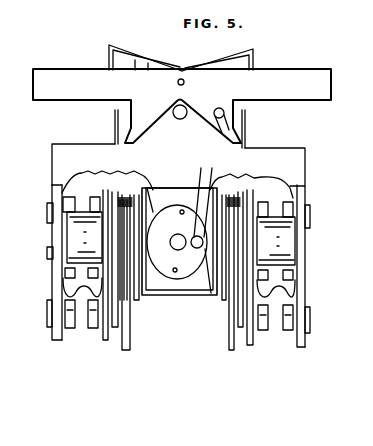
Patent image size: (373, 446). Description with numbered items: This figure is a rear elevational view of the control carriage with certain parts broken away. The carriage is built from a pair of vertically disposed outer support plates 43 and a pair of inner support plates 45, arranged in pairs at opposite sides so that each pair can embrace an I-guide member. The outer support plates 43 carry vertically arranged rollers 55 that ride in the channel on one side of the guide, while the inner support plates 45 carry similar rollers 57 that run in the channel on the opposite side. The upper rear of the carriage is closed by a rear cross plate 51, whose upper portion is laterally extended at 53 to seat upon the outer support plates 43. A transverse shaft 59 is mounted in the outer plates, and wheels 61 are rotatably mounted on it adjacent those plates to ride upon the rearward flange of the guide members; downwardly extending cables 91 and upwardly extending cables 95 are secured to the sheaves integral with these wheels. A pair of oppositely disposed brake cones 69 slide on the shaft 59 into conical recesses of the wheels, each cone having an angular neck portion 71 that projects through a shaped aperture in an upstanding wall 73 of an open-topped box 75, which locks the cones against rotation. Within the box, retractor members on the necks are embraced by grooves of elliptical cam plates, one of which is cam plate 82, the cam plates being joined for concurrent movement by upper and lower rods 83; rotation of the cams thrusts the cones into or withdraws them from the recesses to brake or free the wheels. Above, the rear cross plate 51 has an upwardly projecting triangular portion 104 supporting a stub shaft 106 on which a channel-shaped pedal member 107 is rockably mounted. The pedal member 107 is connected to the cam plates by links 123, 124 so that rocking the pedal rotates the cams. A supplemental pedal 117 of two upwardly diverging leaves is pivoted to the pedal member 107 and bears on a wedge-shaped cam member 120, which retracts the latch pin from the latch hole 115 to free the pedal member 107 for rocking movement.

The pedal member 107 is at (322, 89).
The wedge-shaped cam member 120 is at (140, 67).
The supplemental pedal 117 is at (253, 65).
The latch hole 115 is at (184, 82).
The stub shaft 106 is at (176, 118).
The triangular portion 104 is at (205, 132).
The cable 95 is at (115, 130).
The rear cross plate 51 is at (297, 168).
The lateral extension 53 is at (58, 185).
The outer support plate 43 is at (52, 332).
The link 123 is at (163, 188).
The link 124 is at (242, 225).
The angular neck portion 71 is at (185, 297).
The rod 83 is at (181, 214).
The shaft 59 is at (178, 250).
The cam plate 82 is at (162, 263).
The upstanding wall 73 is at (215, 288).
The wheel 61 is at (68, 238).
The roller 57 is at (97, 195).
The roller 55 is at (72, 338).
The inner support plate 45 is at (105, 342).
The cable 91 is at (130, 348).
The brake cone 69 is at (135, 295).
The box 75 is at (178, 350).